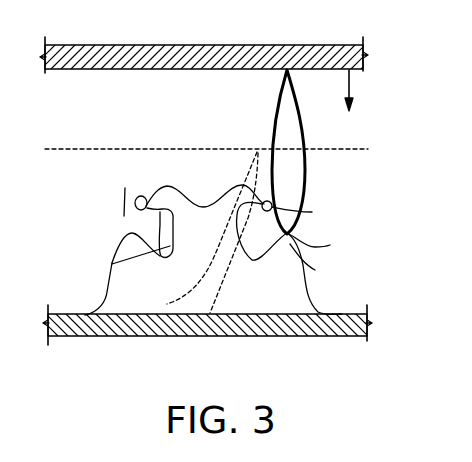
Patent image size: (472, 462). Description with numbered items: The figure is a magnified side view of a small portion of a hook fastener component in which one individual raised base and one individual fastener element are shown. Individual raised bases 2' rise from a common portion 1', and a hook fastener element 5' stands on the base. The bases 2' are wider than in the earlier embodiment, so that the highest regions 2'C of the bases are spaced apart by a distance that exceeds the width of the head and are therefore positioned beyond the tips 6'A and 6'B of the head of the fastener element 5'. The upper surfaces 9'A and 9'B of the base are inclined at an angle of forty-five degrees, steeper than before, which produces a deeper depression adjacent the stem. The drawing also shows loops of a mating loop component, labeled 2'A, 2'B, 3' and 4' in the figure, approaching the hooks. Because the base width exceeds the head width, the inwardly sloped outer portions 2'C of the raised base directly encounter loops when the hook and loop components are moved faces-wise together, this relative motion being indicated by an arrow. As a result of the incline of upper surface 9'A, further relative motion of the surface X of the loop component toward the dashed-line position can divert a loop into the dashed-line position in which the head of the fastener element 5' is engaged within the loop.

The common portion 1' is at (210, 314).
The raised bases 2' is at (201, 235).
The first fiber 2'A is at (218, 257).
The second fiber 2'B is at (115, 261).
The highest regions of the bases 2'C is at (218, 232).
The fiber loop 3' is at (157, 232).
The fiber end 4' is at (94, 194).
The hook fastener elements 5' is at (237, 152).
The tip of the head 6'A is at (342, 213).
The tip of the head 6'B is at (188, 183).
The upper surface of the base 9'A is at (326, 265).
The upper surface of the base 9'B is at (85, 262).
The surface of the loop component X is at (102, 70).